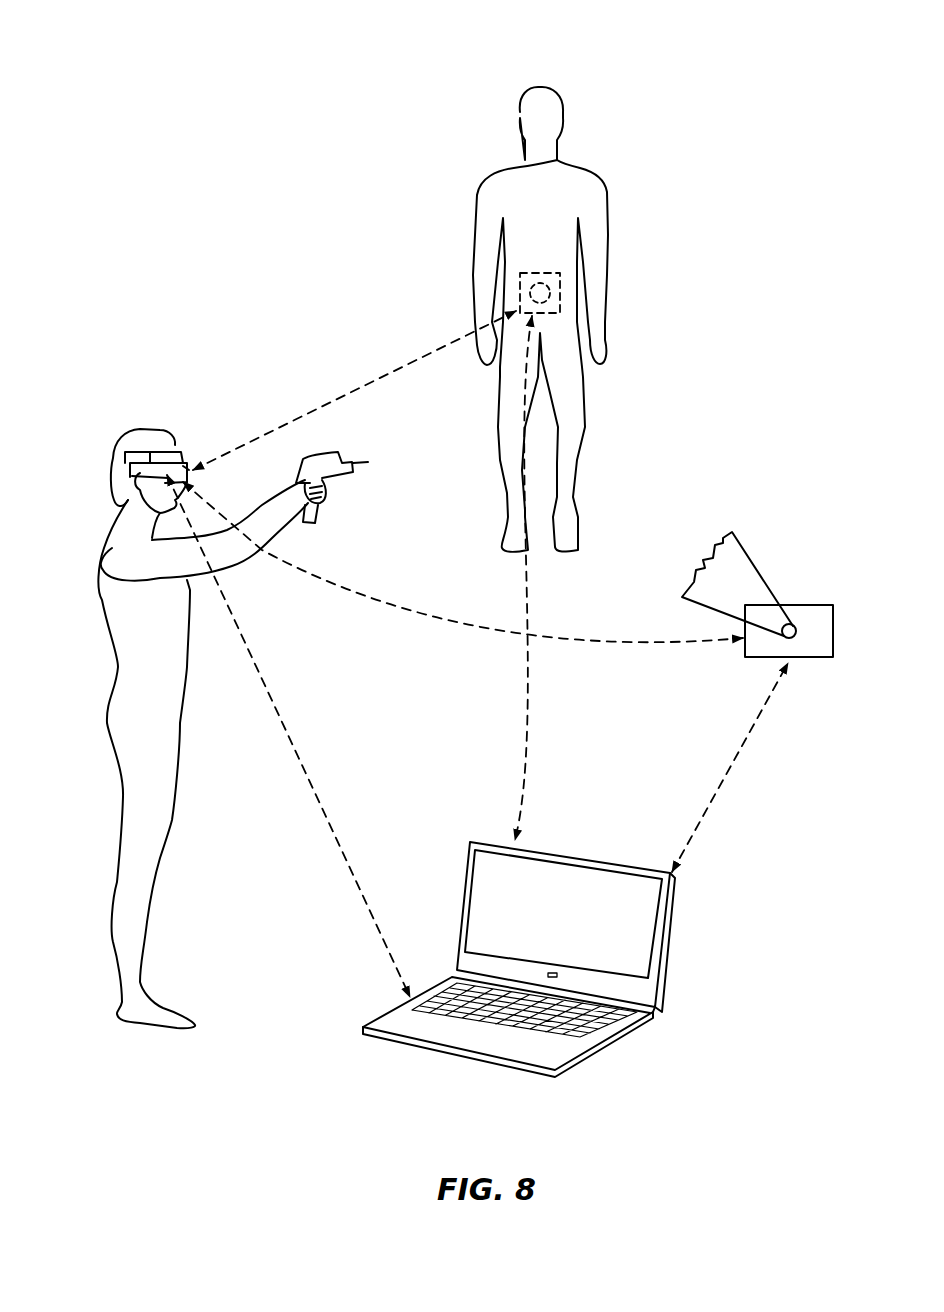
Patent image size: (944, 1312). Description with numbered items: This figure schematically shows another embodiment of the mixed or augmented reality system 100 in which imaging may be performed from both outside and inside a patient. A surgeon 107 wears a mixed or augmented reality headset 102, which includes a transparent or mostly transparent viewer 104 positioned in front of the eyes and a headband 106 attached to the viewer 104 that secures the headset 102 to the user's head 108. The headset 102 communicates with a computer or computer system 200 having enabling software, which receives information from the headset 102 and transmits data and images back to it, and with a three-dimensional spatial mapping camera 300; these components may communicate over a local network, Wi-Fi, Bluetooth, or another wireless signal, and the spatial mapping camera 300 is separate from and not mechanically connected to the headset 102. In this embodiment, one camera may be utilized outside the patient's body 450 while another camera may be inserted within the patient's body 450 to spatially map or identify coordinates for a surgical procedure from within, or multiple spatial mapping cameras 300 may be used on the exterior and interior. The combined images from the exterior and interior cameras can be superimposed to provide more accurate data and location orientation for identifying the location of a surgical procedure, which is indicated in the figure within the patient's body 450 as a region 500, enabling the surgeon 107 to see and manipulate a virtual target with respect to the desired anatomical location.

The mixed or augmented reality system 100 is at (240, 133).
The mixed or augmented reality headset 102 is at (182, 452).
The transparent or mostly transparent viewer 104 is at (193, 466).
The headband 106 is at (146, 462).
The surgeon 107 is at (80, 445).
The user's head 108 is at (122, 448).
The computer or computer system 200 is at (607, 863).
The 3D spatial mapping camera 300 is at (827, 615).
The patient's body 450 is at (603, 172).
The target region 500 is at (560, 295).